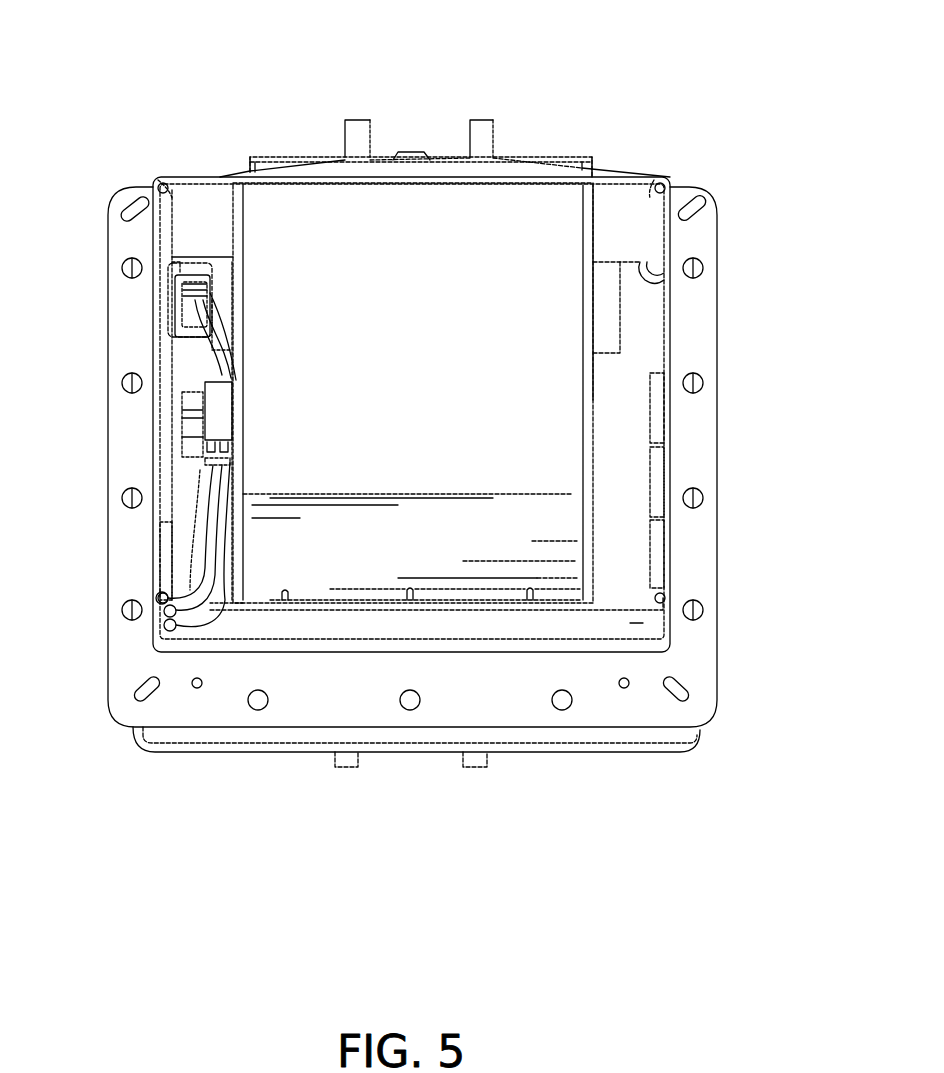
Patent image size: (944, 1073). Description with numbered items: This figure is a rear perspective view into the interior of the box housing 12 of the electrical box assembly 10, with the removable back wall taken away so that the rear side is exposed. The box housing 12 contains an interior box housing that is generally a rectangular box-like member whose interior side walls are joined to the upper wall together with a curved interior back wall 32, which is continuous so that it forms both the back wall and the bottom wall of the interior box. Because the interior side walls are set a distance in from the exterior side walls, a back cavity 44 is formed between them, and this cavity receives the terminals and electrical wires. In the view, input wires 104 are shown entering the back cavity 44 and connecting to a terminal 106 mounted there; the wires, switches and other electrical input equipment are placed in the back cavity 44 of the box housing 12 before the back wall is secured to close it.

The electrical box assembly 10 is at (749, 102).
The electrical box housing 12 is at (640, 308).
The interior back wall 32 is at (562, 571).
The back cavity 44 is at (650, 623).
The input wires 104 is at (188, 303).
The terminal 106 is at (205, 426).